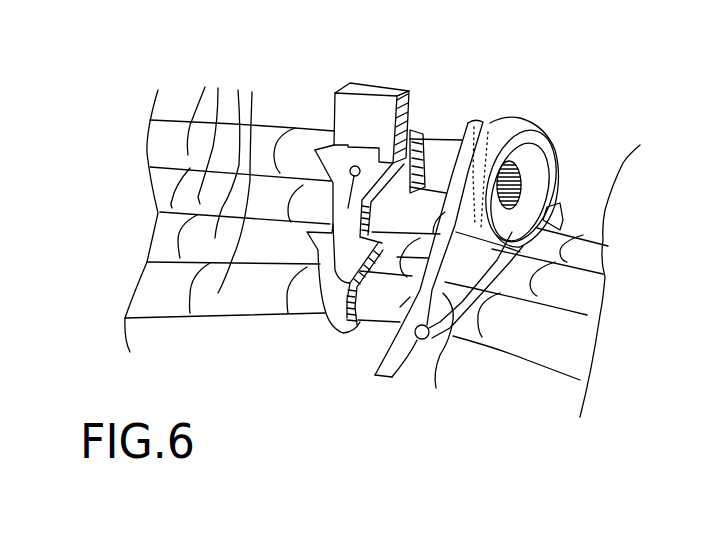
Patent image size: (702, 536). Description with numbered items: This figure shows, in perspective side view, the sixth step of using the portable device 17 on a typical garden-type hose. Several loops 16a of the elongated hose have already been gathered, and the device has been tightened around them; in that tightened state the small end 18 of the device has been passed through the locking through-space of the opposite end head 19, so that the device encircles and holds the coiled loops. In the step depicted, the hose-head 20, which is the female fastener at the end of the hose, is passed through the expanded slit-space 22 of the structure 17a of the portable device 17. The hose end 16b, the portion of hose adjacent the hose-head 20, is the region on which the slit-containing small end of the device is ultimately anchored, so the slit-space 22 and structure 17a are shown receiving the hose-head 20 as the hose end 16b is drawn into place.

The loops of the elongated hose 16a is at (263, 97).
The hose end 16b is at (443, 172).
The portable device 17 is at (438, 158).
The structure of the portable device 17a is at (560, 217).
The small end 18 is at (403, 353).
The opposite end head 19 is at (358, 117).
The hose-head 20 is at (482, 123).
The slit-space 22 is at (436, 388).